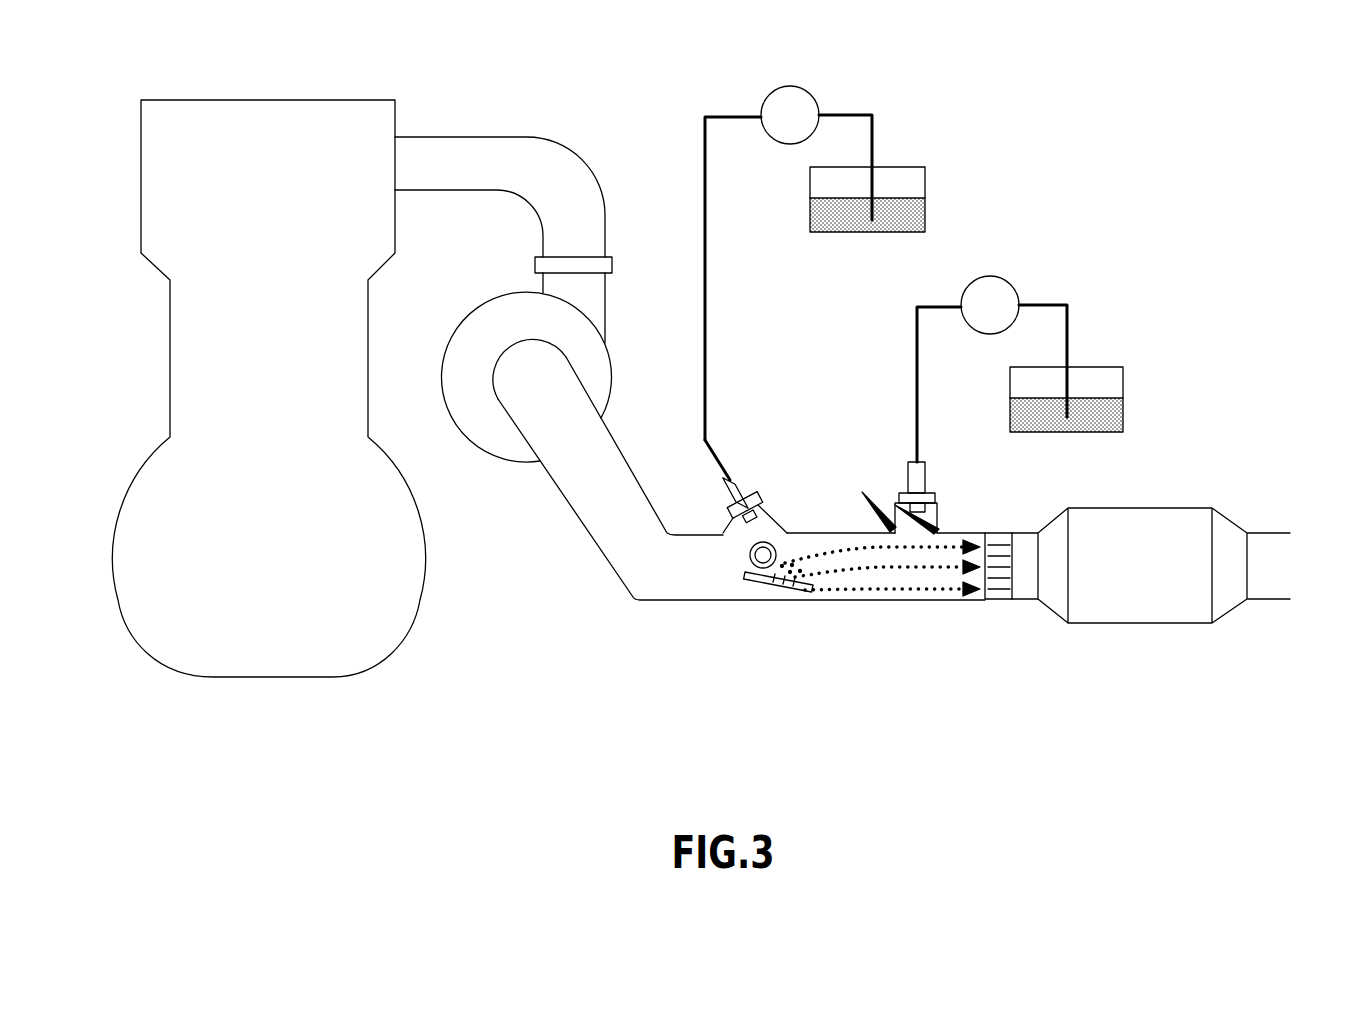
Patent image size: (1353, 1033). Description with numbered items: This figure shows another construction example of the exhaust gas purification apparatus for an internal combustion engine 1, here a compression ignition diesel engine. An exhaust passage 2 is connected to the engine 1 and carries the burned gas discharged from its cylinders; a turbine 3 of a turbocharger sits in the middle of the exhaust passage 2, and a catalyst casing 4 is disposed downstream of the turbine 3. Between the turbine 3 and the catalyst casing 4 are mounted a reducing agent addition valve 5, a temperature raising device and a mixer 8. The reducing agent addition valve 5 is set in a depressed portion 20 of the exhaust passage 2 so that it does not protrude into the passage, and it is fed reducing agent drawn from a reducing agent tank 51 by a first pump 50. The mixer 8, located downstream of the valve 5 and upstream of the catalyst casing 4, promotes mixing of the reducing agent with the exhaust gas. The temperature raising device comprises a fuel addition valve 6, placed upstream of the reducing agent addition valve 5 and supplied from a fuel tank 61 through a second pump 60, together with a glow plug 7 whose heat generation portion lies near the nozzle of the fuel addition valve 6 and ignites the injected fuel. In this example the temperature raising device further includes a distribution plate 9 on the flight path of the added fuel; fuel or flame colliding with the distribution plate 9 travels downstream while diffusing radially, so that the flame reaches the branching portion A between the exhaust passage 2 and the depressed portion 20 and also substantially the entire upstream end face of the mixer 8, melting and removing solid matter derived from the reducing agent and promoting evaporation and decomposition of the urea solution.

The internal combustion engine 1 is at (272, 103).
The exhaust passage 2 is at (538, 143).
The turbine 3 is at (493, 308).
The catalyst casing 4 is at (1147, 620).
The reducing agent addition valve 5 is at (909, 465).
The fuel addition valve 6 is at (745, 480).
The glow plug 7 is at (745, 563).
The mixer 8 is at (993, 600).
The distribution plate 9 is at (790, 588).
The depressed portion 20 is at (938, 515).
The first pump 50 is at (1010, 287).
The reducing agent tank 51 is at (1123, 387).
The second pump 60 is at (803, 90).
The fuel tank 61 is at (922, 187).
The branching portion A is at (890, 500).